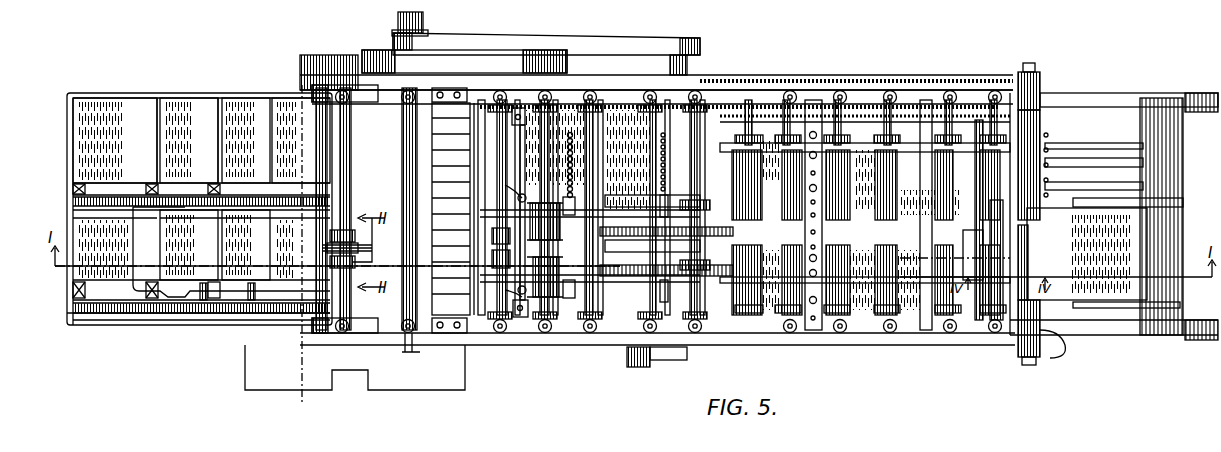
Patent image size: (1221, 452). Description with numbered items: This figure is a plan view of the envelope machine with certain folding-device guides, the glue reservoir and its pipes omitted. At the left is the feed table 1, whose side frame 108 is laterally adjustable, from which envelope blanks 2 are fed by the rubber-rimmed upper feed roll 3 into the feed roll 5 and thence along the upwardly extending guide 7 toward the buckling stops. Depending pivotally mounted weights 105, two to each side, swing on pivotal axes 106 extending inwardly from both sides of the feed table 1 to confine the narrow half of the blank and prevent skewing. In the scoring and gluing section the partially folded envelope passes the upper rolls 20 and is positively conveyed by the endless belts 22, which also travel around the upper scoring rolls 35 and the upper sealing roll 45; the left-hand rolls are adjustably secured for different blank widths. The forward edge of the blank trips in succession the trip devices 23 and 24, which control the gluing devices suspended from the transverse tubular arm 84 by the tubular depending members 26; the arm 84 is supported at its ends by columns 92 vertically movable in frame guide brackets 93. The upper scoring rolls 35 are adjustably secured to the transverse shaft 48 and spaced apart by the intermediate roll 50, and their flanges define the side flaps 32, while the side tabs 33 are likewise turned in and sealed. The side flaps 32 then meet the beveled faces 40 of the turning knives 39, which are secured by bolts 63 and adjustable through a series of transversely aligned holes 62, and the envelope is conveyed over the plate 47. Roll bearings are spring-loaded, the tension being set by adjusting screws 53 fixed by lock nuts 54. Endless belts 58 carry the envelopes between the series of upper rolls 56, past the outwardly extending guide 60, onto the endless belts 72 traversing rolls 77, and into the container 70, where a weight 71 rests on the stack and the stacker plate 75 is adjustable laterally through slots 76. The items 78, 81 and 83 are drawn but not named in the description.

The feed table 1 is at (108, 320).
The envelope blank 2 is at (193, 312).
The upper feed roll 3 is at (322, 242).
The feed roll 5 is at (402, 158).
The guide 7 is at (452, 318).
The upper roll 20 is at (480, 209).
The endless belt 22 is at (628, 264).
The trip device 23 is at (492, 250).
The trip device 24 is at (492, 237).
The tubular depending member 26 is at (505, 196).
The side flap 32 is at (300, 195).
The side tab 33 is at (172, 198).
The upper scoring roll 35 is at (560, 150).
The turning knife 39 is at (618, 240).
The beveled face 40 is at (578, 205).
The upper sealing roll 45 is at (708, 215).
The plate 47 is at (625, 130).
The transverse shaft 48 is at (545, 108).
The intermediate roll 50 is at (554, 212).
The adjusting screw 53 is at (890, 97).
The lock nut 54 is at (995, 90).
The upper roll 56 is at (866, 227).
The endless belt 58 is at (903, 152).
The guide 60 is at (1012, 298).
The hole 62 is at (668, 160).
The bolt 63 is at (668, 195).
The container 70 is at (1114, 212).
The weight 71 is at (1087, 254).
The endless belt 72 is at (1080, 190).
The stacker plate 75 is at (1183, 202).
The slot 76 is at (1155, 158).
The roll 77 is at (1072, 340).
The gear 78 is at (335, 232).
The collar 81 is at (325, 256).
The guide rod 83 is at (342, 148).
The transverse tubular arm 84 is at (500, 140).
The column 92 is at (530, 108).
The frame guide bracket 93 is at (518, 108).
The weight 105 is at (207, 195).
The pivotal axis 106 is at (203, 283).
The side frame 108 is at (118, 198).